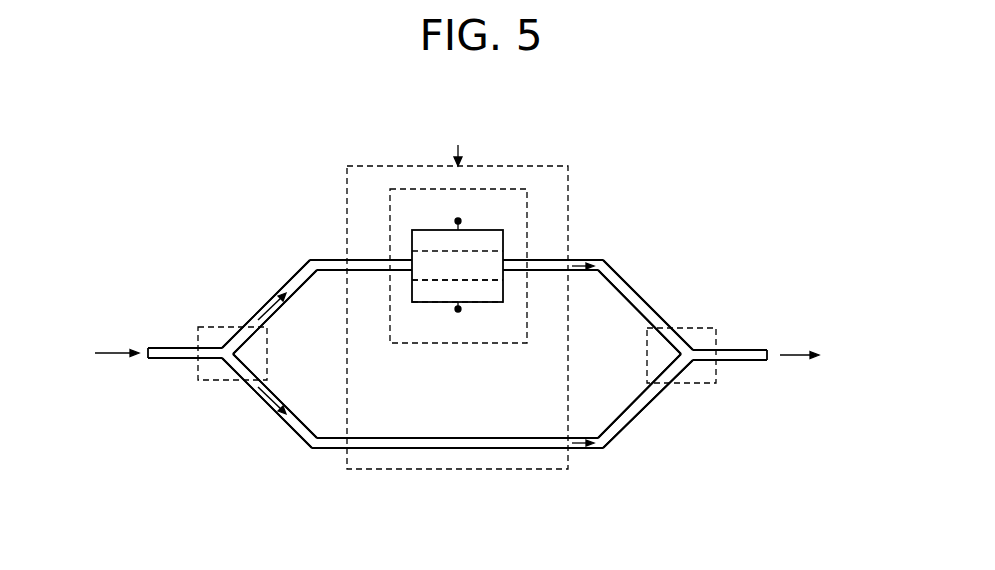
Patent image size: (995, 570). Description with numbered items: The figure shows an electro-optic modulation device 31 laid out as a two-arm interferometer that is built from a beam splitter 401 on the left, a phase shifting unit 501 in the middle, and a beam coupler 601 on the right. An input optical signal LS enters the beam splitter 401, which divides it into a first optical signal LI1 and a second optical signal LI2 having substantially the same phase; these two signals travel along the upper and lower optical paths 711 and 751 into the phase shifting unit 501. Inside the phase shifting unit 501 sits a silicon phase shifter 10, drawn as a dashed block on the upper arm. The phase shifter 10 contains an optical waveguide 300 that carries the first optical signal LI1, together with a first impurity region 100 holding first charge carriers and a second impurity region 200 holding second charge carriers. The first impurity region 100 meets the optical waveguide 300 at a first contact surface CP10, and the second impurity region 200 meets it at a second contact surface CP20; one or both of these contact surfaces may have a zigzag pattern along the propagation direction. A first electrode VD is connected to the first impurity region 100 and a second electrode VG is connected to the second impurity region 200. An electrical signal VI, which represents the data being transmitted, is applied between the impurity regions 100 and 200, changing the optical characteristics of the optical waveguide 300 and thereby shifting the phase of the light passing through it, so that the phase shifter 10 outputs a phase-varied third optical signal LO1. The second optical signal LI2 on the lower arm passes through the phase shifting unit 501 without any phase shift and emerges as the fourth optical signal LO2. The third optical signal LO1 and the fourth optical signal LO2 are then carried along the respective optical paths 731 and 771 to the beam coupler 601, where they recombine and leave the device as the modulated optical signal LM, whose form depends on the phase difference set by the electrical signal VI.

The electro-optic modulation device 31 is at (471, 108).
The phase shifter 10 is at (390, 238).
The first impurity region 100 is at (418, 229).
The second impurity region 200 is at (428, 298).
The optical waveguide 300 is at (504, 261).
The beam splitter 401 is at (205, 383).
The phase shifting unit 501 is at (460, 471).
The beam coupler 601 is at (703, 385).
The optical path 711 is at (298, 276).
The optical path 731 is at (642, 299).
The optical path 751 is at (306, 446).
The optical path 771 is at (642, 413).
The first contact surface CP10 is at (471, 251).
The second contact surface CP20 is at (472, 281).
The first electrode VD is at (458, 211).
The second electrode VG is at (458, 320).
The electrical signal VI is at (458, 145).
The input optical signal LS is at (104, 353).
The modulated optical signal LM is at (819, 356).
The first optical signal LI1 is at (266, 303).
The second optical signal LI2 is at (268, 405).
The third optical signal LO1 is at (587, 260).
The fourth optical signal LO2 is at (570, 450).